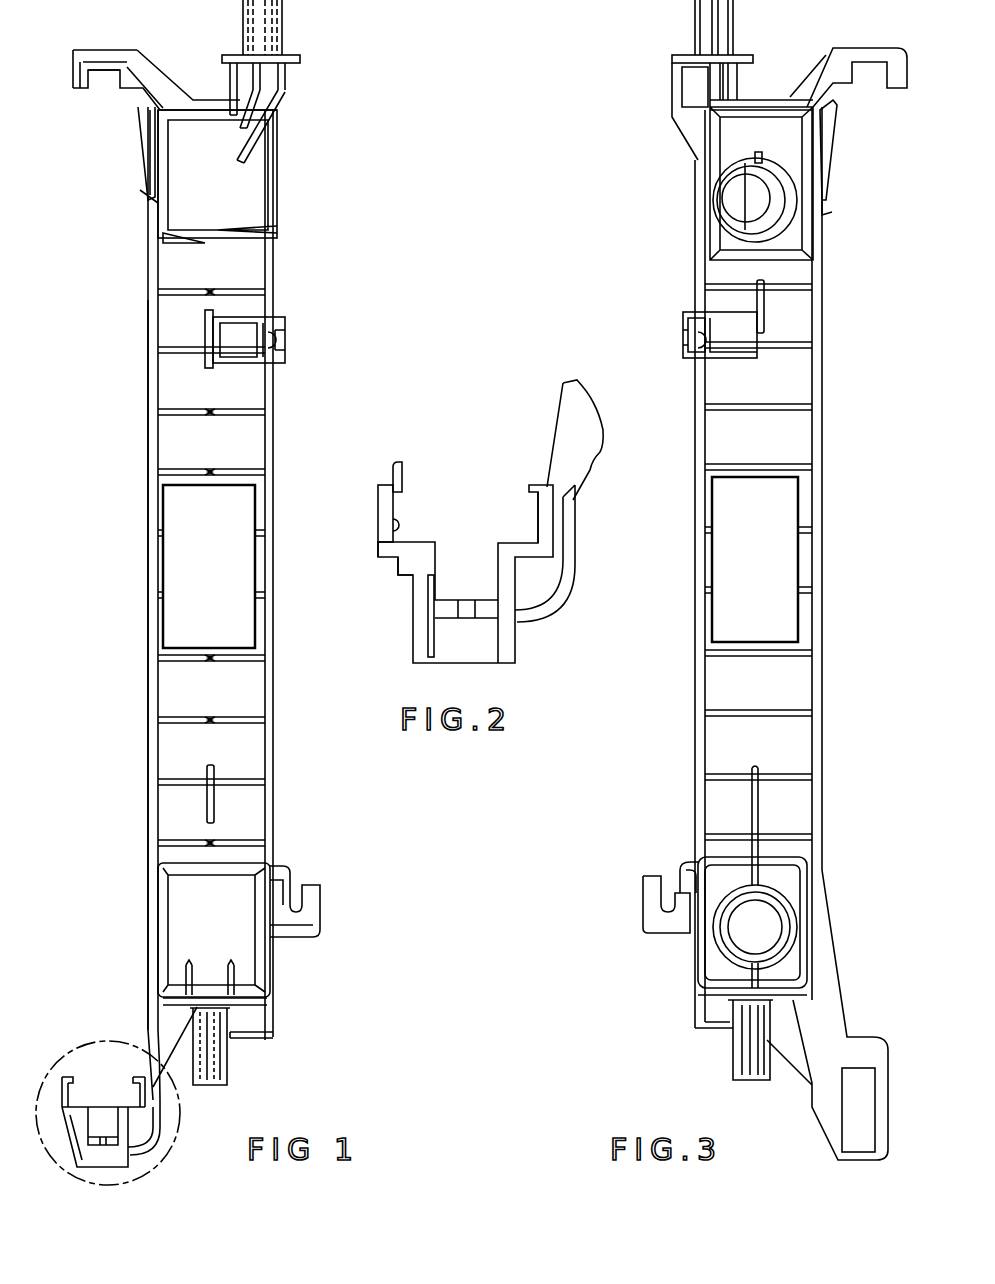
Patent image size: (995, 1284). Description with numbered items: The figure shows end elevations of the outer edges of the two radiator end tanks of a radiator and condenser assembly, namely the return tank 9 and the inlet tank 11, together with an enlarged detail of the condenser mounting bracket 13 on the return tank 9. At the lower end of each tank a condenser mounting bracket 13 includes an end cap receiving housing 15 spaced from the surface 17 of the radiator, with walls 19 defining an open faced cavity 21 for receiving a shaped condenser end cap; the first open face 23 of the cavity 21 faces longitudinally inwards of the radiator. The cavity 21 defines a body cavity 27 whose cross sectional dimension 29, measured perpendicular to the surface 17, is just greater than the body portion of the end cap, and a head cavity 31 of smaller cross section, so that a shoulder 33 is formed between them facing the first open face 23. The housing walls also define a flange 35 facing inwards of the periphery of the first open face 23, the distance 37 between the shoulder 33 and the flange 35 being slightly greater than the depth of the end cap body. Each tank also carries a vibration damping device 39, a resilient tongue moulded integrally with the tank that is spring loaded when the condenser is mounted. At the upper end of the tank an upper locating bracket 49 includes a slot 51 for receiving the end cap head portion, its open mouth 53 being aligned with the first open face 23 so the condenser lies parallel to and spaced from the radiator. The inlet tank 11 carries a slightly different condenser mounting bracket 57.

In FIG. 1, the radiator end tank 9 is at (273, 757).
In FIG. 3, the radiator end tank 11 is at (697, 707).
In FIG. 1, the condenser mounting bracket 13 is at (62, 1093).
In FIG. 2, the condenser mounting bracket 13 is at (385, 513).
In FIG. 2, the end cap receiving housing 15 is at (405, 597).
In FIG. 1, the surface of the radiator 17 is at (148, 758).
In FIG. 2, the walls 19 is at (408, 522).
In FIG. 2, the open faced cavity 21 is at (468, 542).
In FIG. 2, the first open face 23 is at (429, 469).
In FIG. 2, the body cavity 27 is at (448, 534).
In FIG. 2, the cross sectional dimension 29 is at (537, 485).
In FIG. 2, the head cavity 31 is at (457, 582).
In FIG. 2, the shoulder 33 is at (533, 548).
In FIG. 2, the flange 35 is at (395, 470).
In FIG. 2, the distance 37 is at (555, 493).
In FIG. 1, the vibration damping device 39 is at (140, 163).
In FIG. 3, the vibration damping device 39 is at (826, 165).
In FIG. 1, the upper locating bracket 49 is at (73, 88).
In FIG. 1, the slot 51 is at (97, 60).
In FIG. 1, the open mouth 53 is at (105, 85).
In FIG. 3, the condenser mounting bracket 57 is at (857, 1055).